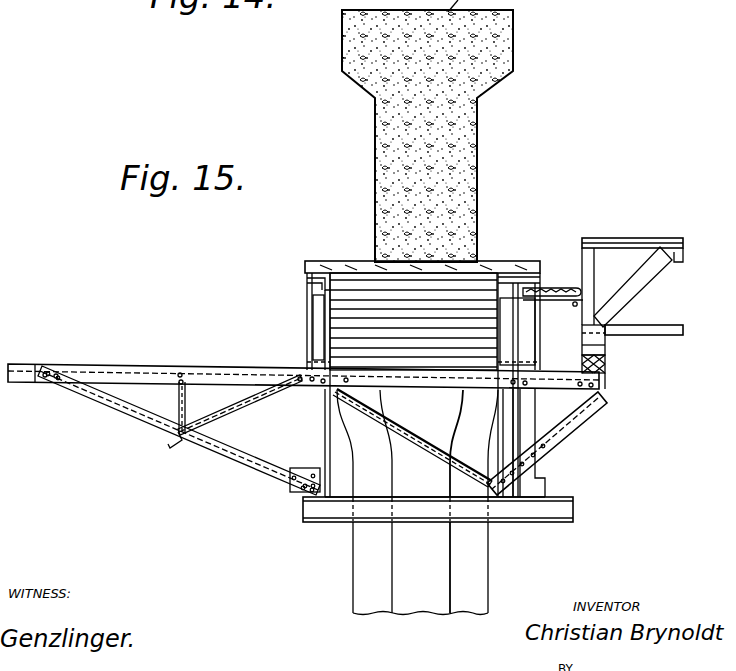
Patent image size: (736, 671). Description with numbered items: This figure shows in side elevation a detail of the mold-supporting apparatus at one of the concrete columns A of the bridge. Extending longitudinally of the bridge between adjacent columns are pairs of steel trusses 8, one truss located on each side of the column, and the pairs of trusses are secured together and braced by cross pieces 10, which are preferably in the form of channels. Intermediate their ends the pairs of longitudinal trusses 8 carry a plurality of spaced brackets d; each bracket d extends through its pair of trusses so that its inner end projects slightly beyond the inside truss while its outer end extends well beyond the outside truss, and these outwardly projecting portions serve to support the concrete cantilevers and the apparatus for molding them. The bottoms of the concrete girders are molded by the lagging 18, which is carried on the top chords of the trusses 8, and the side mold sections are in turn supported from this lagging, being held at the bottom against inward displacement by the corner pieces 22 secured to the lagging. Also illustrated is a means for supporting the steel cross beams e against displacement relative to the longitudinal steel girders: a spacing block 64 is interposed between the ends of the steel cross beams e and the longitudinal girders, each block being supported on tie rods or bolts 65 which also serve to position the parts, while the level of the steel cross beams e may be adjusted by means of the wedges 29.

The corner piece 22 is at (372, 260).
The lagging 18 is at (332, 262).
The spacing block 64 is at (553, 289).
The tie rod or bolt 65 is at (578, 304).
The steel cross beam e is at (641, 246).
The wedge 29 is at (600, 346).
The bracket d is at (196, 372).
The longitudinal truss 8 is at (320, 428).
The cross piece 10 is at (326, 514).
The concrete column A is at (470, 567).